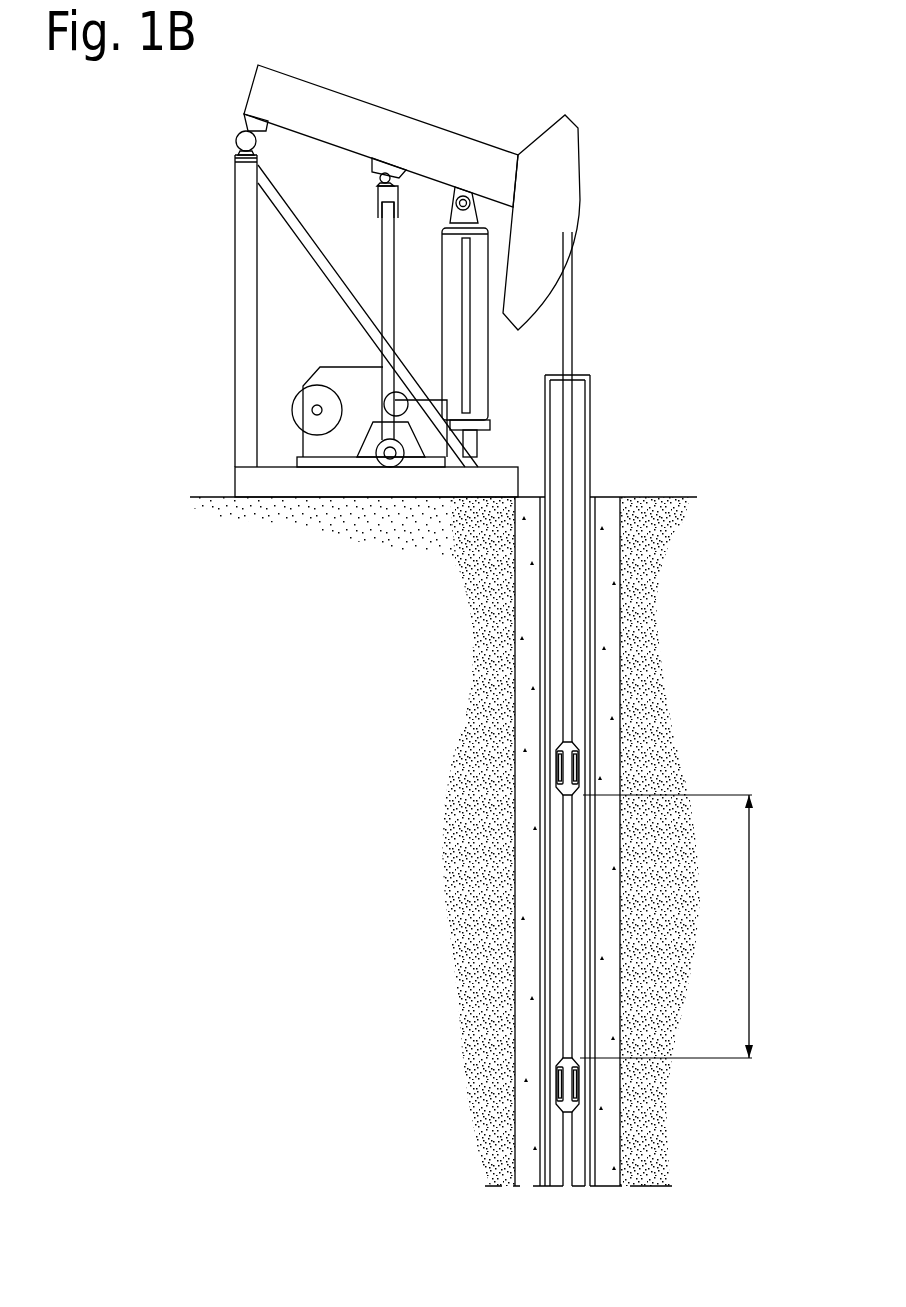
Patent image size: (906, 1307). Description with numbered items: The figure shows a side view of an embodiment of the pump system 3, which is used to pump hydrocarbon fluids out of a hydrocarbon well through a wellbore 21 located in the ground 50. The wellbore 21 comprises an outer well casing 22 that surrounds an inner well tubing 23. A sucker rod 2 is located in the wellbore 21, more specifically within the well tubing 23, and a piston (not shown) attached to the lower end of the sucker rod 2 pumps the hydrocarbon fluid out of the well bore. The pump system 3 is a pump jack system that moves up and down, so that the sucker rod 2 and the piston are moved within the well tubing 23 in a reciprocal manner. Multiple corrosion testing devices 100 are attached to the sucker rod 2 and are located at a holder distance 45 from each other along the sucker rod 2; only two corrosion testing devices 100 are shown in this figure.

The pump system 3 is at (225, 230).
The ground 50 is at (667, 493).
The wellbore 21 is at (525, 570).
The outer well casing 22 is at (545, 660).
The inner well tubing 23 is at (590, 713).
The sucker rod 2 is at (577, 648).
The corrosion testing device 100 is at (585, 770).
The holder distance 45 is at (666, 926).